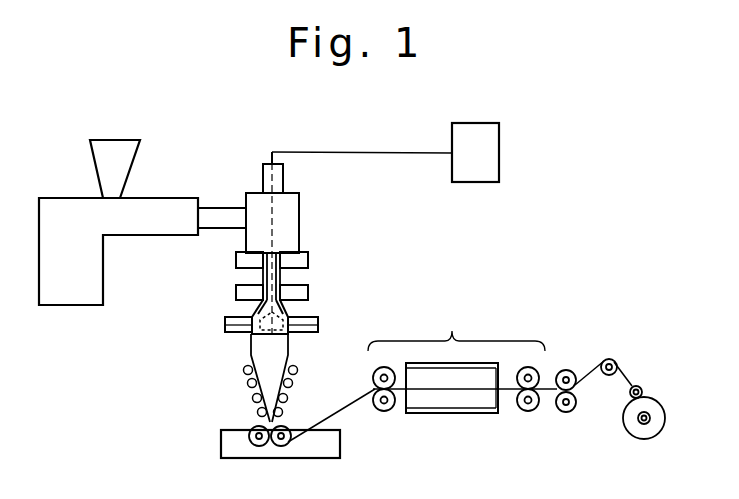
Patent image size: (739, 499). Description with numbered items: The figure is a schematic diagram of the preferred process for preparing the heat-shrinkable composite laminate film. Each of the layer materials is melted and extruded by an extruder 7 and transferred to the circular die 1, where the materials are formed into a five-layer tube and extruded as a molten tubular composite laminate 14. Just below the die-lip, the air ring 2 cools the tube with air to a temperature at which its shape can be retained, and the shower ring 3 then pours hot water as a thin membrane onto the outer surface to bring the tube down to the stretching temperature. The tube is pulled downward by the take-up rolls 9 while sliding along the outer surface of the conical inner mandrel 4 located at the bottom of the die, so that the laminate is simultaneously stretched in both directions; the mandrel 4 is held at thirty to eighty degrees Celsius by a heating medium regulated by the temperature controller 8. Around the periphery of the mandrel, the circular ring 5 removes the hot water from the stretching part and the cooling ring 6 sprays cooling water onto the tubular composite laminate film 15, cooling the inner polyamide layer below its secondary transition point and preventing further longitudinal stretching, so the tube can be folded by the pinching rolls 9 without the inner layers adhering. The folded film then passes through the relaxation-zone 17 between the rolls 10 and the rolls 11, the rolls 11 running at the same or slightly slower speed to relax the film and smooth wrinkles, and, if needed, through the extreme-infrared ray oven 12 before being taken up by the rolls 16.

The circular die 1 is at (290, 217).
The air ring 2 is at (305, 258).
The shower ring 3 is at (308, 292).
The conical inner mandrel 4 is at (270, 326).
The circular ring 5 is at (318, 320).
The cooling ring 6 is at (318, 332).
The extruder 7 is at (162, 198).
The temperature controller 8 is at (492, 153).
The take-up rolls 9 is at (256, 428).
The rolls 10 is at (383, 412).
The rolls 11 is at (528, 412).
The extreme-infrared ray oven 12 is at (455, 414).
The molten tubular composite laminate 14 is at (258, 277).
The tubular composite laminate film 15 is at (295, 358).
The rolls 16 is at (637, 432).
The relaxation-zone 17 is at (456, 328).